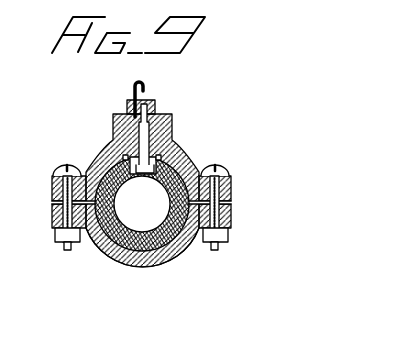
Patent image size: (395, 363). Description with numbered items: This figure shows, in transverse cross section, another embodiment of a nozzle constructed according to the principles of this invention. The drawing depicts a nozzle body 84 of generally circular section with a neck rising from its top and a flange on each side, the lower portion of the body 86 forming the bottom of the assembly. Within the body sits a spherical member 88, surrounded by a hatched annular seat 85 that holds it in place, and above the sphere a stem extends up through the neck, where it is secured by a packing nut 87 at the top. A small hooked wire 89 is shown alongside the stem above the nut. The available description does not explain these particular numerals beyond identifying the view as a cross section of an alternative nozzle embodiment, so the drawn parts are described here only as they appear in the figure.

The valve body 84 is at (113, 148).
The ball seat ring 85 is at (123, 252).
The lower body section 86 is at (167, 254).
The packing nut 87 is at (158, 108).
The ball 88 is at (142, 204).
The hook wire 89 is at (133, 88).